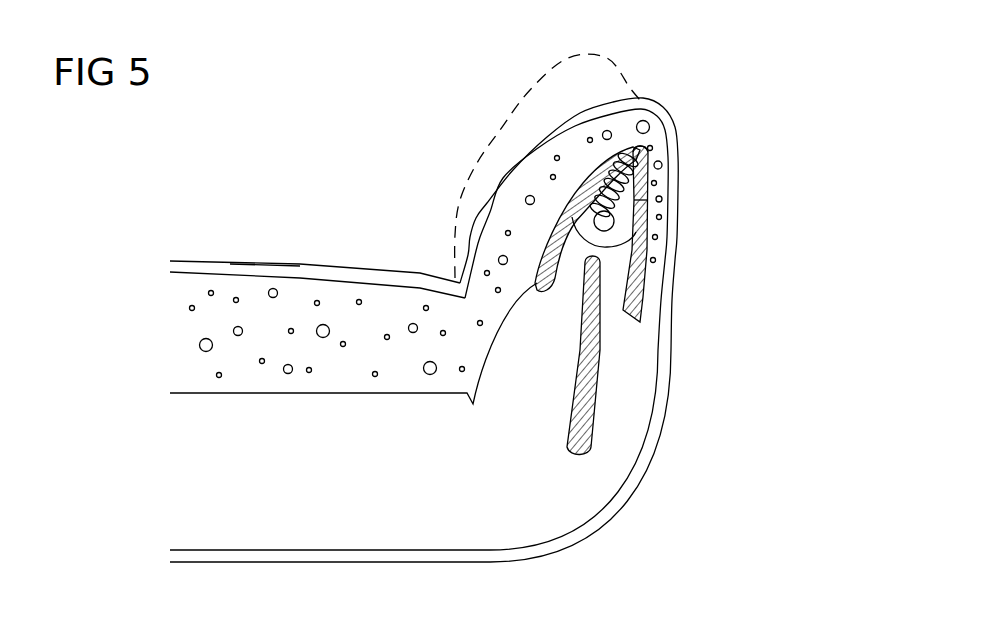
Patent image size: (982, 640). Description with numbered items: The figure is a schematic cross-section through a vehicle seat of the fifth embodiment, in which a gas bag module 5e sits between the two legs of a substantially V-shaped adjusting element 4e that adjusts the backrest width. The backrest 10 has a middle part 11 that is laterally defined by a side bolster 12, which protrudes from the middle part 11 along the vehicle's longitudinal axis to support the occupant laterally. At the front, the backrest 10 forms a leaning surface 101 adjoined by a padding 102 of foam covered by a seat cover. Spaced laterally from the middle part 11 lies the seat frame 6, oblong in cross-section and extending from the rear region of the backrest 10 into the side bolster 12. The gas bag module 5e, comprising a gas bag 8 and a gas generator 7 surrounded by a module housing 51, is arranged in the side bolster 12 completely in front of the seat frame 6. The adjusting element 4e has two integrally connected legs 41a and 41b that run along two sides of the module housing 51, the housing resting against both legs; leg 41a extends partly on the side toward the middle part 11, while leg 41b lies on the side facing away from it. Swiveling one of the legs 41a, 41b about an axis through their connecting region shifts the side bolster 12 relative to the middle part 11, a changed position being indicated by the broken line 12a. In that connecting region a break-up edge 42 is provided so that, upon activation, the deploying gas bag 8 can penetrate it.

The backrest 10 is at (607, 540).
The middle part 11 is at (222, 247).
The leaning surface 101 is at (280, 272).
The padding 102 is at (202, 323).
The side bolster 12 is at (689, 266).
The broken line 12a is at (529, 72).
The adjusting element 4e is at (537, 184).
The leg 41a is at (587, 163).
The leg 41b is at (651, 197).
The break-up edge 42 is at (638, 148).
The gas bag 8 is at (662, 165).
The gas bag module 5e is at (658, 202).
The module housing 51 is at (662, 217).
The gas generator 7 is at (612, 222).
The seat frame 6 is at (588, 430).